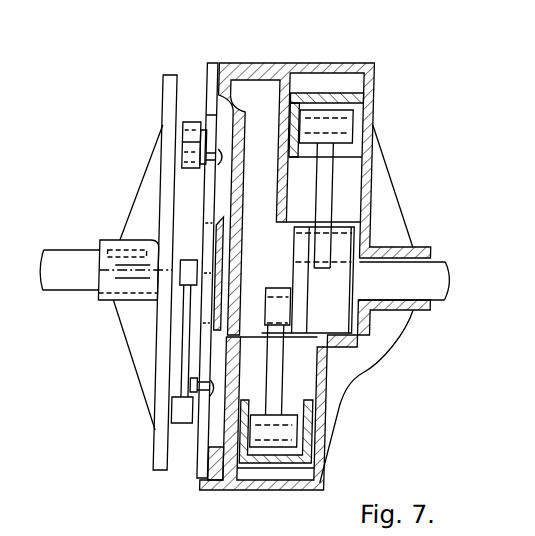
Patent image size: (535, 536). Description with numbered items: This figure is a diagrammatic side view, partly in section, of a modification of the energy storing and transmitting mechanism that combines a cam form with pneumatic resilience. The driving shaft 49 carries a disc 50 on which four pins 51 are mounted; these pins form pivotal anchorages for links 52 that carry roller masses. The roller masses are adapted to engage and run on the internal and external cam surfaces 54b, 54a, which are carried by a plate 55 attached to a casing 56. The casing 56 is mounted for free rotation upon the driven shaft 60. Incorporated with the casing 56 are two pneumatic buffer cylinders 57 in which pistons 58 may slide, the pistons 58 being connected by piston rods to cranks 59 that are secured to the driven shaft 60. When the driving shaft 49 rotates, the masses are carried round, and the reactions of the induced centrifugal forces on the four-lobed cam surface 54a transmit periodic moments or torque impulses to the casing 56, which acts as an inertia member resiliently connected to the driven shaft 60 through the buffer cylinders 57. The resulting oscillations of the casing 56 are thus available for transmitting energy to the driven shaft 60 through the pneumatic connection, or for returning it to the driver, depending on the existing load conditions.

The driving shaft 49 is at (87, 278).
The disc 50 is at (172, 107).
The pins 51 is at (203, 427).
The links 52 is at (193, 333).
The external cam surface 54a is at (215, 112).
The internal cam surface 54b is at (220, 200).
The plate 55 is at (209, 425).
The casing 56 is at (252, 66).
The pneumatic buffer cylinders 57 is at (357, 74).
The pistons 58 is at (369, 126).
The cranks 59 is at (359, 240).
The driven shaft 60 is at (440, 273).